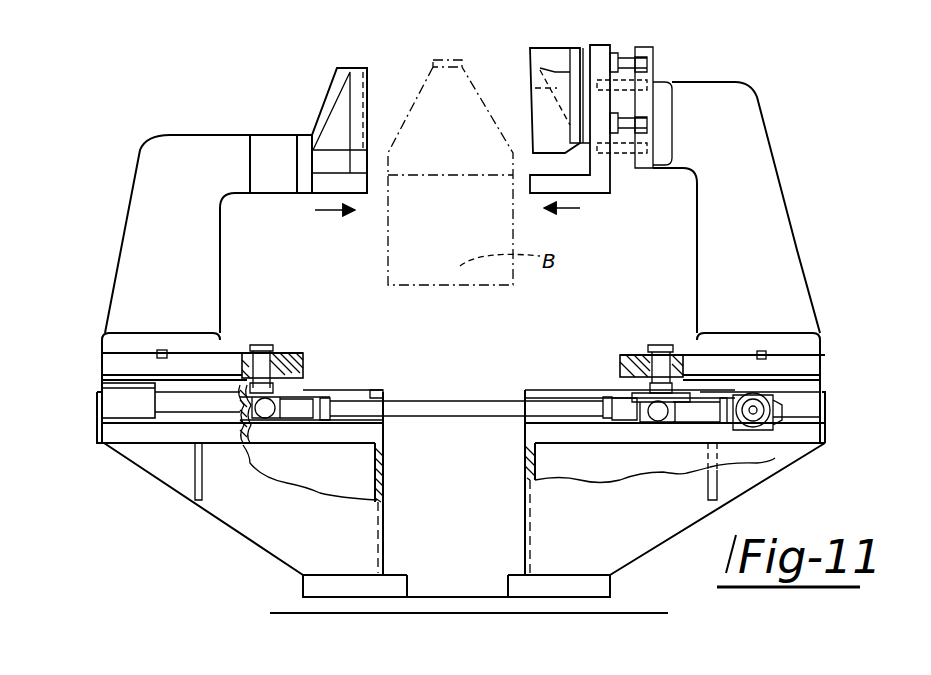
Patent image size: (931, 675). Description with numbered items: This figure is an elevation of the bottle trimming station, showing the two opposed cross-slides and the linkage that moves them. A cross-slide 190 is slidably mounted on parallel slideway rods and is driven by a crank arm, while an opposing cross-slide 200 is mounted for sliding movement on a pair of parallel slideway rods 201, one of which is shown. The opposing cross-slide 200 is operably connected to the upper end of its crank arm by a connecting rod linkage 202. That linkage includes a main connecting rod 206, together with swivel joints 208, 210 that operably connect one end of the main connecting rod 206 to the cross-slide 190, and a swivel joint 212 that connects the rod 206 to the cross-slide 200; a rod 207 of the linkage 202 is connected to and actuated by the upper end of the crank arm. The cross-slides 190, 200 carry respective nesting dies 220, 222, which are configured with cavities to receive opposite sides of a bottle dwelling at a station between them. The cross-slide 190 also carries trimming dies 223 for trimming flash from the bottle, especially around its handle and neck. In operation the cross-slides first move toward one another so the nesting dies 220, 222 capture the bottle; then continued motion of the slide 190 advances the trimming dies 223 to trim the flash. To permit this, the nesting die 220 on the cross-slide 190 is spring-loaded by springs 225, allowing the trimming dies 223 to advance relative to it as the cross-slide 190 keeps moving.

The cross-slide 190 is at (612, 366).
The opposing cross-slide 200 is at (337, 329).
The slideway rods 201 is at (192, 400).
The connecting rod linkage 202 is at (416, 388).
The main connecting rod 206 is at (486, 414).
The rod 207 is at (752, 410).
The swivel joint 208 is at (775, 412).
The swivel joint 210 is at (687, 414).
The swivel joint 212 is at (263, 417).
The nesting die 220 is at (612, 40).
The nesting die 222 is at (380, 124).
The trimming dies 223 is at (588, 8).
The springs 225 is at (637, 82).